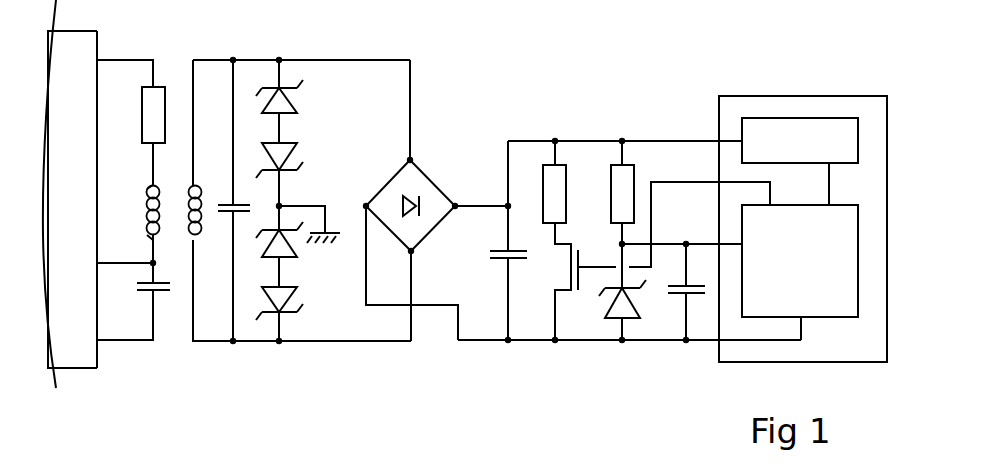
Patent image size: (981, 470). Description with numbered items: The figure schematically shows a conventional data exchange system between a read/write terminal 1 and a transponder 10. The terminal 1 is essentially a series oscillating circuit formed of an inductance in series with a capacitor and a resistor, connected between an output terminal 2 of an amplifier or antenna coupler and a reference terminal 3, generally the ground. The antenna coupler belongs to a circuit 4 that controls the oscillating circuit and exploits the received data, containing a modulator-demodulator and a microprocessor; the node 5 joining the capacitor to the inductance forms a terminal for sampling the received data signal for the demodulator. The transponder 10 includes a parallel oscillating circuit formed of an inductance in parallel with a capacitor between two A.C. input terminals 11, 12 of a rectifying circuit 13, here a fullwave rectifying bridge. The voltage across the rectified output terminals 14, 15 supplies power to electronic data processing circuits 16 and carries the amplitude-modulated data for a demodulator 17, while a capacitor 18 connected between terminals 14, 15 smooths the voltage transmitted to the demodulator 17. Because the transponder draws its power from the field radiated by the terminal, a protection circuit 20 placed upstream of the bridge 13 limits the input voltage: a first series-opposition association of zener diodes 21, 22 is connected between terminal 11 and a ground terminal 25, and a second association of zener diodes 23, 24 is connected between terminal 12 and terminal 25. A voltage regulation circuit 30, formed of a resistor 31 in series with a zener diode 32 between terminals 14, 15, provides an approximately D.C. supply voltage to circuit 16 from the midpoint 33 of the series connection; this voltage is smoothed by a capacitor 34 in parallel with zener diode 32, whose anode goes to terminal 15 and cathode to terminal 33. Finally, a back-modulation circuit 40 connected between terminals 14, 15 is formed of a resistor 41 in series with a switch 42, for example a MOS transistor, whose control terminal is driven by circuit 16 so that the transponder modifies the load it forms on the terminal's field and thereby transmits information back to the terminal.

The read/write terminal 1 is at (124, 392).
The output terminal 2 is at (120, 58).
The reference terminal 3 is at (128, 342).
The control circuit 4 is at (72, 368).
The connection node 5 is at (157, 262).
The transponder 10 is at (625, 252).
The first A.C. input terminal 11 is at (280, 60).
The second A.C. input terminal 12 is at (282, 344).
The rectifying circuit 13 is at (424, 174).
The rectified output terminal 14 is at (503, 208).
The rectified output terminal 15 is at (508, 344).
The electronic data processing circuits 16 is at (835, 318).
The demodulator 17 is at (766, 117).
The capacitor 18 is at (503, 240).
The protection circuit 20 is at (300, 196).
The zener diode 21 is at (292, 100).
The zener diode 22 is at (293, 151).
The zener diode 23 is at (297, 252).
The zener diode 24 is at (298, 299).
The ground terminal 25 is at (288, 206).
The voltage regulation circuit 30 is at (743, 221).
The resistor 31 is at (636, 176).
The zener diode 32 is at (634, 300).
The midpoint 33 is at (686, 242).
The capacitor 34 is at (694, 293).
The back-modulation circuit 40 is at (656, 209).
The resistor 41 is at (570, 205).
The switch 42 is at (560, 291).